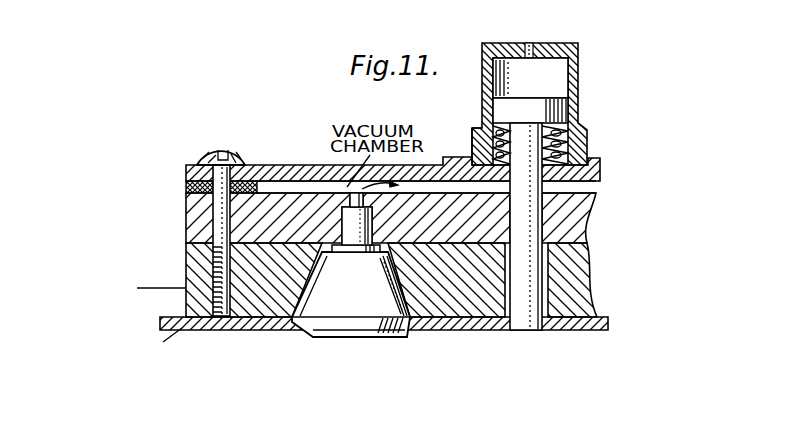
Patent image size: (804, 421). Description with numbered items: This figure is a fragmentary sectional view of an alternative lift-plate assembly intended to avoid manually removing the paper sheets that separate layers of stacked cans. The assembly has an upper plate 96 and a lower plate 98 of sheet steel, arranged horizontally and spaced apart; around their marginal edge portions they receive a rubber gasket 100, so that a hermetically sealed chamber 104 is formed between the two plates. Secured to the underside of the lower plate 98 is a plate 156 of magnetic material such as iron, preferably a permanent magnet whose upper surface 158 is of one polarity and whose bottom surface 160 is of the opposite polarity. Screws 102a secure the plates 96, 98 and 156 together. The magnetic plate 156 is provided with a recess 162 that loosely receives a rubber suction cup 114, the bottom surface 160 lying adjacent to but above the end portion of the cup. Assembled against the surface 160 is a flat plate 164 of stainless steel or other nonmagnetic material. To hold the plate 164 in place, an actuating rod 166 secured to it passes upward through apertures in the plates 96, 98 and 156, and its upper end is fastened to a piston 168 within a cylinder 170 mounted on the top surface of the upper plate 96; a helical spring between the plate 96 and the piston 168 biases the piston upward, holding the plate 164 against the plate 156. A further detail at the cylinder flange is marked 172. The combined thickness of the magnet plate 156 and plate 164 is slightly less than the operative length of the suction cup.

The upper plate 96 is at (186, 172).
The gasket 100 is at (186, 187).
The lower plate 98 is at (186, 222).
The screws 102a is at (229, 157).
The hermetically sealed chamber 104 is at (295, 187).
The suction cup 114 is at (355, 300).
The magnetic plate 156 is at (573, 280).
The upper surface 158 is at (567, 243).
The bottom surface 160 is at (580, 332).
The recess 162 is at (300, 290).
The stainless steel plate 164 is at (486, 331).
The actuating rod 166 is at (530, 158).
The piston 168 is at (545, 110).
The cylinder 170 is at (578, 72).
The flange 172 is at (482, 130).